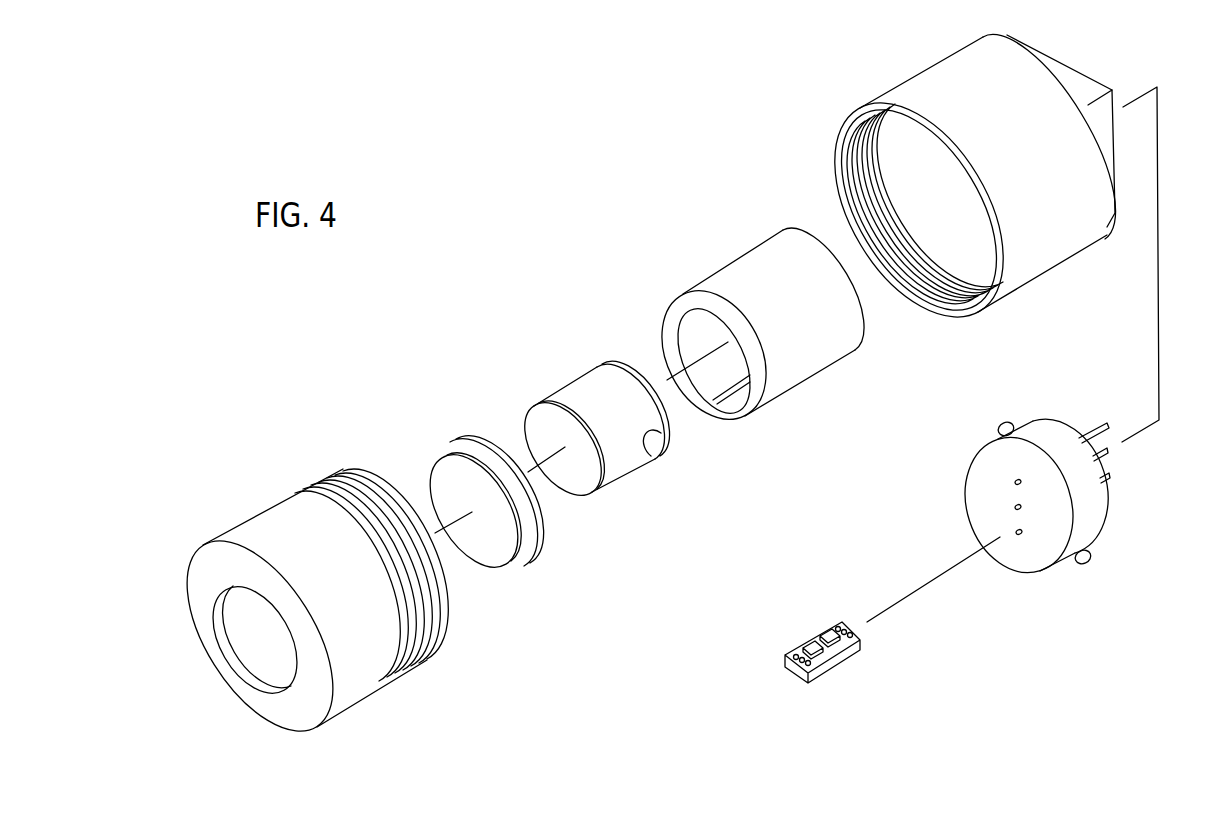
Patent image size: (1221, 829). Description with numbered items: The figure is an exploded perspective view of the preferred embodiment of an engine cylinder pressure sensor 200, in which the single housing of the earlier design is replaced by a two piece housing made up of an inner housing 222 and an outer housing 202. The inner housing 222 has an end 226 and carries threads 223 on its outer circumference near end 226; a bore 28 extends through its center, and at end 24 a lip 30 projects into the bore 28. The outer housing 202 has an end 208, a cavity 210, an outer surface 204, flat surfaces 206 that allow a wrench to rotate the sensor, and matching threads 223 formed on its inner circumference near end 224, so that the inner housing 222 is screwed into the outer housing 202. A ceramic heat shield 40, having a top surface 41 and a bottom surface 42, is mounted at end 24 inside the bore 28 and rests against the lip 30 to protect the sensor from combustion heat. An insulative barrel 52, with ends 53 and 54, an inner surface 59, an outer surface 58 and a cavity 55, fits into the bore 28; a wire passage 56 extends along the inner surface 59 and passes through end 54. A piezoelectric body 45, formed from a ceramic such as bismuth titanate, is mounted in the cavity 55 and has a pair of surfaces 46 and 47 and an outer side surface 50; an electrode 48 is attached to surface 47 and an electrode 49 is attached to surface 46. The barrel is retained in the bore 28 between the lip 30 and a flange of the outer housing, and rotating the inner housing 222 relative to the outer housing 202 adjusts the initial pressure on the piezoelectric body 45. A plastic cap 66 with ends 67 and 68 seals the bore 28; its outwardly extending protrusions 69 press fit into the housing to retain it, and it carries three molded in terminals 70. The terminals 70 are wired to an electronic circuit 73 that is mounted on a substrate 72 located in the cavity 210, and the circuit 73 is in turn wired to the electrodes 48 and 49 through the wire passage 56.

The engine cylinder pressure sensor 200 is at (492, 172).
The inner housing 222 is at (249, 510).
The end 226 is at (373, 473).
The threads 223 is at (423, 665).
The end 24 is at (203, 673).
The bore 28 is at (272, 650).
The lip 30 is at (213, 617).
The ceramic heat shield 40 is at (462, 435).
The top surface 41 is at (538, 527).
The bottom surface 42 is at (437, 488).
The piezoelectric body 45 is at (572, 373).
The surface 46 is at (658, 453).
The surface 47 is at (607, 458).
The electrode 48 is at (540, 422).
The electrode 49 is at (635, 365).
The outer side surface 50 is at (593, 378).
The insulative barrel 52 is at (753, 240).
The end 53 is at (722, 295).
The end 54 is at (817, 232).
The cavity 55 is at (702, 317).
The wire passage 56 is at (717, 400).
The outer surface 58 is at (812, 360).
The inner surface 59 is at (685, 323).
The outer housing 202 is at (1015, 302).
The outer surface 204 is at (1063, 242).
The flat surfaces 206 is at (1088, 95).
The end 208 is at (1075, 68).
The cavity 210 is at (900, 137).
The end 224 is at (836, 150).
The cap 66 is at (1045, 414).
The end 67 is at (1032, 562).
The end 68 is at (1112, 508).
The protrusions 69 is at (1000, 428).
The terminals 70 is at (1108, 425).
The substrate 72 is at (832, 665).
The electronic circuit 73 is at (827, 630).